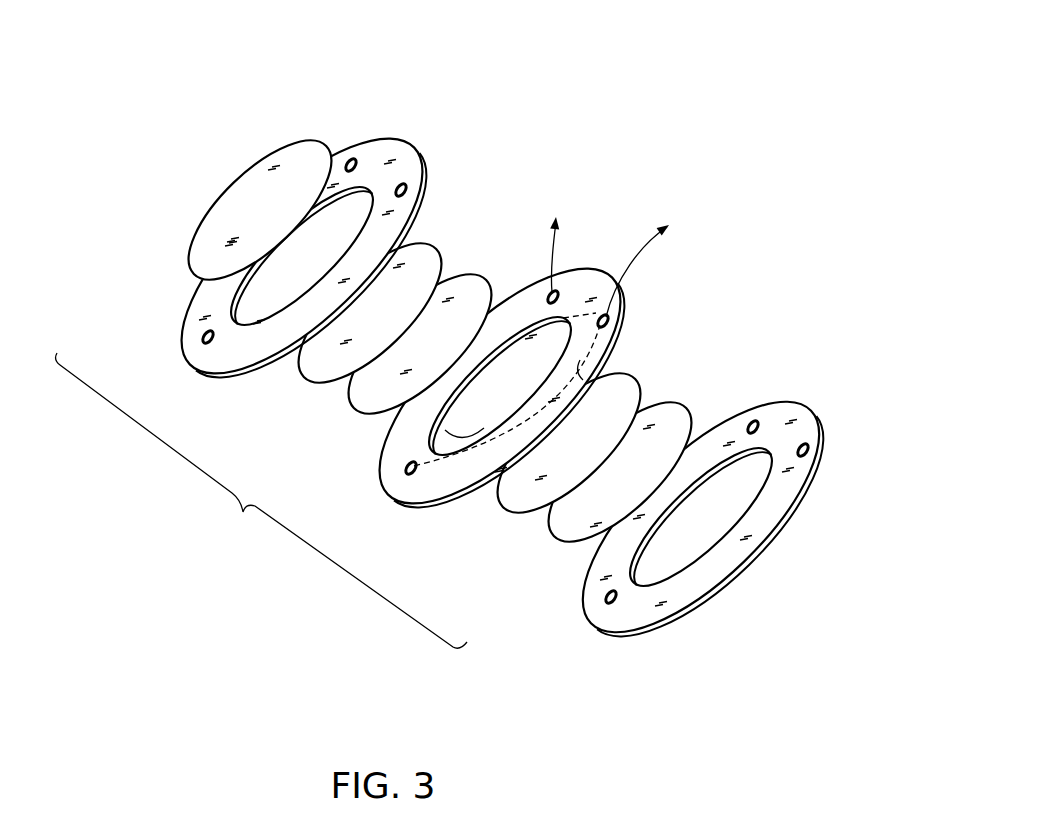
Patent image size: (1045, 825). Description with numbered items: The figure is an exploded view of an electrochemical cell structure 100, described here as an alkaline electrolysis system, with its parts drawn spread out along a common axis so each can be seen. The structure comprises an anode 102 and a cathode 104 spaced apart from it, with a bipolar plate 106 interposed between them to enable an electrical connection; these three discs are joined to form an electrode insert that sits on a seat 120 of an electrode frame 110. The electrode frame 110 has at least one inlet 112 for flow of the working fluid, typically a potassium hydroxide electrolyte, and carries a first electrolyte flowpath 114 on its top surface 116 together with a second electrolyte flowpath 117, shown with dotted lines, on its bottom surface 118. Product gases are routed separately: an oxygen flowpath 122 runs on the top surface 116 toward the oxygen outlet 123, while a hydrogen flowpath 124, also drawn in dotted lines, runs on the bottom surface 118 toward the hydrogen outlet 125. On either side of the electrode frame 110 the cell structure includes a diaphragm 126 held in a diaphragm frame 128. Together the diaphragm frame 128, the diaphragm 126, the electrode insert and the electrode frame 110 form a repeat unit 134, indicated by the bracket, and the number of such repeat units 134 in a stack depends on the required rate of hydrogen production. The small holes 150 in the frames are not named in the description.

The electrochemical cell structure 100 is at (742, 53).
The anode 102 is at (424, 250).
The cathode 104 is at (632, 390).
The bipolar plate 106 is at (473, 288).
The electrode frame 110 is at (580, 360).
The inlet 112 is at (410, 478).
The first electrolyte flowpath 114 is at (420, 452).
The top surface 116 is at (437, 488).
The second electrolyte flowpath 117 is at (473, 437).
The bottom surface 118 is at (455, 497).
The seat 120 is at (455, 419).
The oxygen flowpath 122 is at (562, 300).
The oxygen outlet 123 is at (562, 178).
The hydrogen flowpath 124 is at (612, 322).
The hydrogen outlet 125 is at (678, 207).
The diaphragm 126 is at (242, 190).
The diaphragm frame 128 is at (407, 165).
The repeat unit 134 is at (261, 500).
The bolt hole 150 is at (232, 353).